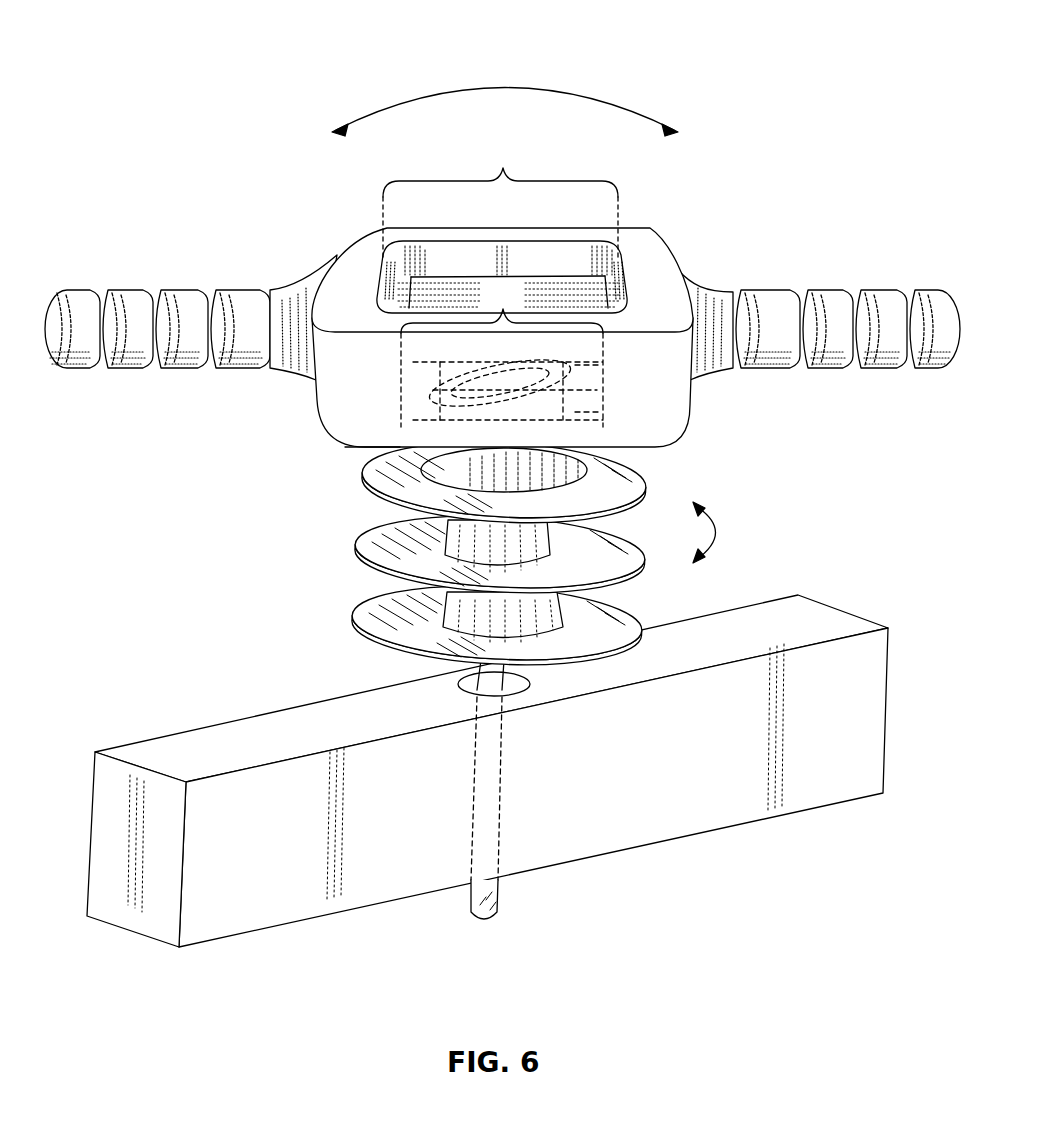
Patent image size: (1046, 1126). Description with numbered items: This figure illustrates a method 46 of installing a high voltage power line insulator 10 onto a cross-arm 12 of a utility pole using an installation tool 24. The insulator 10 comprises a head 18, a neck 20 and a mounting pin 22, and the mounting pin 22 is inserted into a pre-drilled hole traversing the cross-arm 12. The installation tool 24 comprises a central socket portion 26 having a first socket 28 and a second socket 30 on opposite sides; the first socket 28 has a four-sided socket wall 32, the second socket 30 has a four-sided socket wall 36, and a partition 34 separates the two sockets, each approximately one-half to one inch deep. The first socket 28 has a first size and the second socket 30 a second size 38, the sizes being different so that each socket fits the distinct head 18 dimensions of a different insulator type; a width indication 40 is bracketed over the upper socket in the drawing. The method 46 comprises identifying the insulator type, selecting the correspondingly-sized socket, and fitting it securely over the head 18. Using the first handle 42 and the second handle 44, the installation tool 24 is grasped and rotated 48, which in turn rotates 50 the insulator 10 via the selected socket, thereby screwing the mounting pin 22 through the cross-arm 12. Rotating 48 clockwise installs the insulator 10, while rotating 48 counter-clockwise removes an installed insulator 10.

The high voltage power line insulator 10 is at (320, 537).
The cross-arm 12 is at (415, 897).
The head 18 is at (563, 379).
The neck 20 is at (487, 673).
The mounting pin 22 is at (578, 448).
The installation tool 24 is at (702, 208).
The central socket portion 26 is at (640, 247).
The first socket 28 is at (413, 417).
The second socket 30 is at (535, 270).
The four-sided socket wall 32 is at (408, 377).
The partition 34 is at (405, 300).
The four-sided socket wall 36 is at (455, 255).
The second size 38 is at (502, 352).
The recess width 40 is at (500, 196).
The first handle 42 is at (825, 295).
The second handle 44 is at (120, 300).
The method 46 is at (238, 21).
The rotating of the installation tool 48 is at (505, 85).
The rotating of the insulator 50 is at (713, 535).